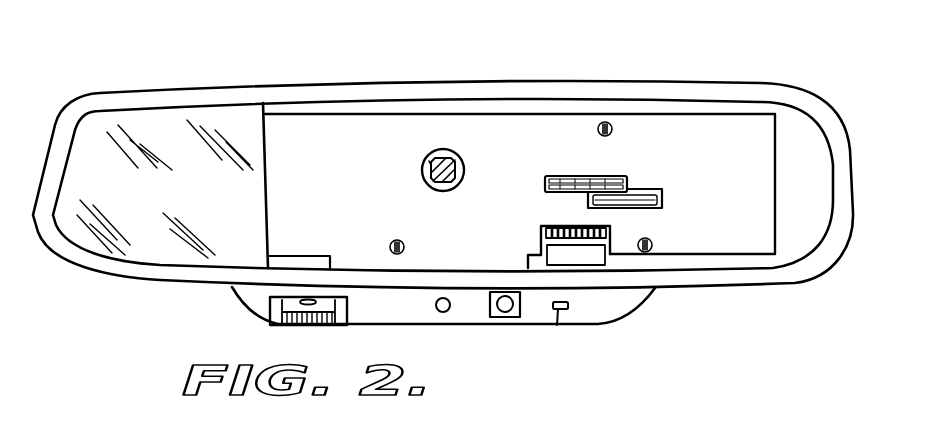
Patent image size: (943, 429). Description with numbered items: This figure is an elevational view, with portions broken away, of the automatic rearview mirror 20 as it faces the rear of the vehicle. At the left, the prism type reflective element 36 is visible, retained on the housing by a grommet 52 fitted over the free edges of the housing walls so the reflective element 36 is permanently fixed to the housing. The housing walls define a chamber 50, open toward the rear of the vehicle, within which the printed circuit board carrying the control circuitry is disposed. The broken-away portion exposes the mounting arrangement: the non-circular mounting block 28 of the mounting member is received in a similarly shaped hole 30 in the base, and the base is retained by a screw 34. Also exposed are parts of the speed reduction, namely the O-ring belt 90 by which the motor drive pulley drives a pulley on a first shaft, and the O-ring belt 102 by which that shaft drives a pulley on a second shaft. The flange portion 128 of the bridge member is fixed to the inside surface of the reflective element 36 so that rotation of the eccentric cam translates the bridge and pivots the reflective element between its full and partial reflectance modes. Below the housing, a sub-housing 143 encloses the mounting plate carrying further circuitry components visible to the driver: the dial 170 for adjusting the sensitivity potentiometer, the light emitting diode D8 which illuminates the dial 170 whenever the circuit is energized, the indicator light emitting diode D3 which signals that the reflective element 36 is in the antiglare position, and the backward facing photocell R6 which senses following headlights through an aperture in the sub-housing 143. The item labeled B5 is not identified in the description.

The automatic rearview mirror 20 is at (748, 84).
The non-circular mounting block 28 is at (452, 150).
The hole 30 is at (468, 172).
The screw 34 is at (429, 161).
The prism type reflective element 36 is at (167, 128).
The chamber 50 is at (814, 175).
The grommet 52 is at (85, 98).
The O-ring belt 90 is at (545, 182).
The O-ring belt 102 is at (662, 197).
The flange portion 128 is at (595, 250).
The sub-housing 143 is at (593, 308).
The dial 170 is at (290, 326).
The light emitting diode D8 is at (316, 302).
The light emitting diode D3 is at (445, 298).
The photocell R6 is at (503, 296).
The terminal B5 is at (556, 326).